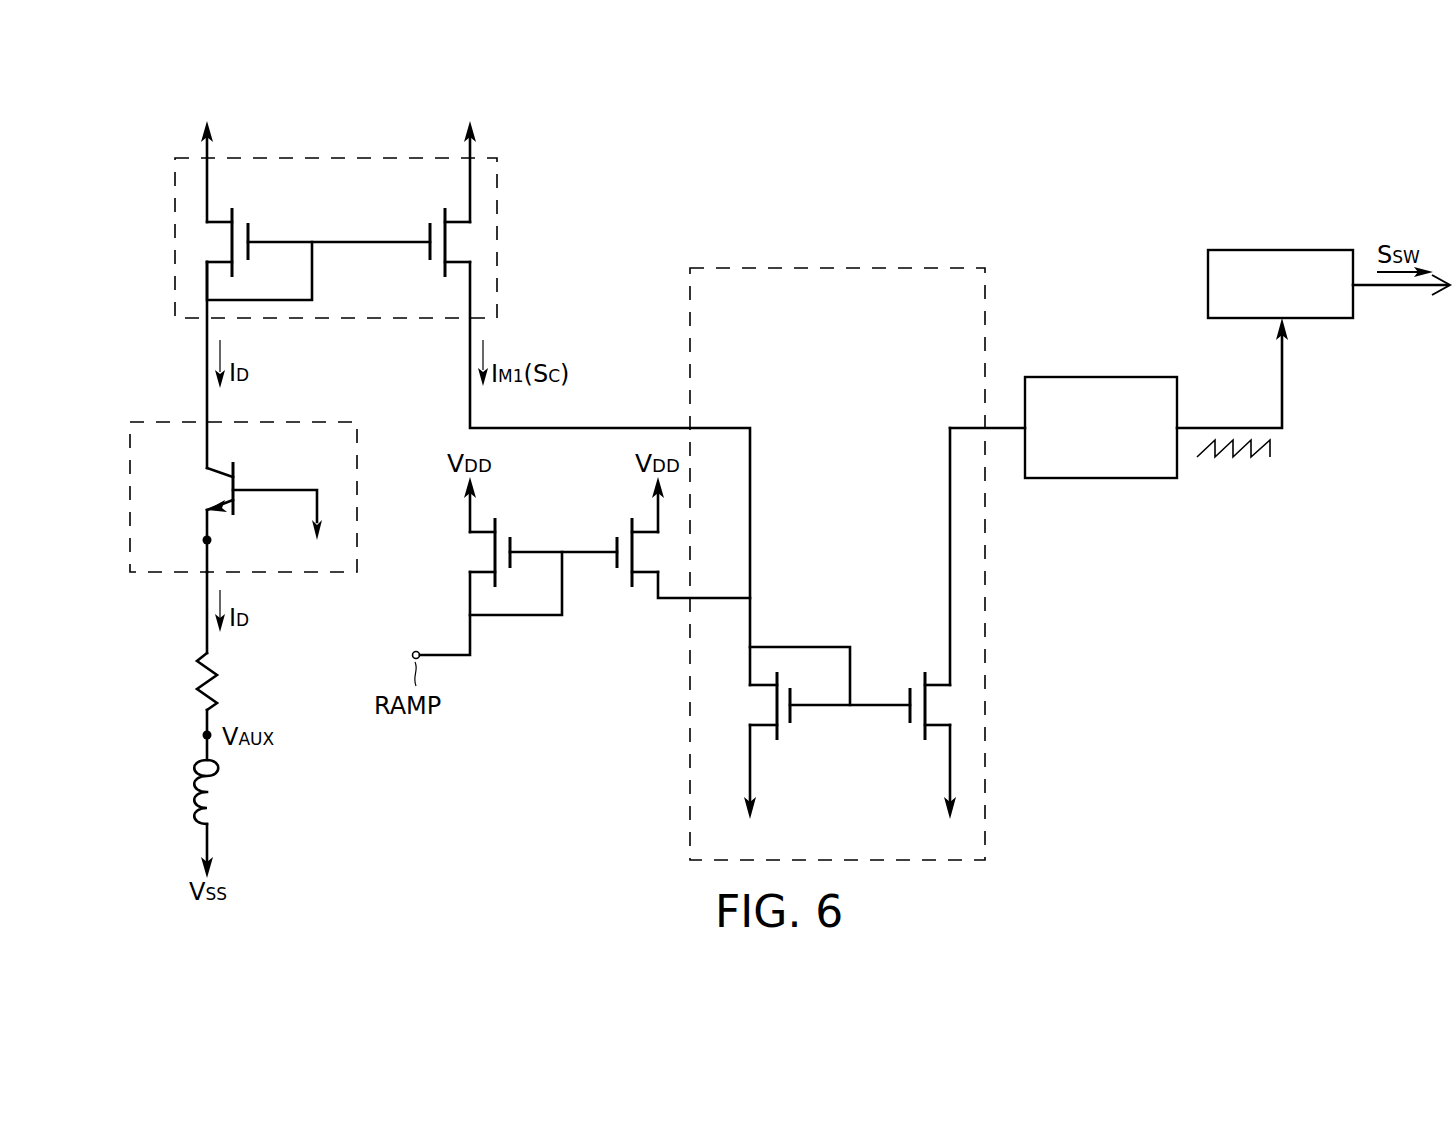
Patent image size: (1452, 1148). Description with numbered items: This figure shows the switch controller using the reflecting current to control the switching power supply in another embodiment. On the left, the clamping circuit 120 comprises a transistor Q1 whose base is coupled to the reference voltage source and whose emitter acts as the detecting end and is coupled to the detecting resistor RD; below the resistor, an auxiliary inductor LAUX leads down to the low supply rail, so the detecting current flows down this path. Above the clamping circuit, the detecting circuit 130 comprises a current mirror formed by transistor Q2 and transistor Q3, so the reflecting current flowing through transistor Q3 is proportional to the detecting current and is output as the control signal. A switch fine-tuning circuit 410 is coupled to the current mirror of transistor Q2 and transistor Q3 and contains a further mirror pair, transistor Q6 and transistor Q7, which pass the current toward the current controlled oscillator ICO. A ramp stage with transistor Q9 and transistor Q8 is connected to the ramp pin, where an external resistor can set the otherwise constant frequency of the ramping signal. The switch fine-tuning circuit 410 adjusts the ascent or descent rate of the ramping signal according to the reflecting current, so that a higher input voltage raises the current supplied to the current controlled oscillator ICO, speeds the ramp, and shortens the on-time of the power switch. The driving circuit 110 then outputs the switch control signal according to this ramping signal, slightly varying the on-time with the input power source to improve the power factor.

The driving circuit 110 is at (1278, 249).
The clamping circuit 120 is at (233, 476).
The detecting circuit 130 is at (336, 206).
The switch fine-tuning circuit 410 is at (837, 535).
The transistor Q1 is at (244, 479).
The transistor Q2 is at (245, 217).
The transistor Q3 is at (432, 217).
The transistor Q6 is at (790, 727).
The transistor Q7 is at (910, 727).
The transistor Q8 is at (622, 576).
The transistor Q9 is at (508, 530).
The current controlled oscillator ICO is at (1104, 376).
The detecting resistor RD is at (225, 681).
The auxiliary inductor LAUX is at (236, 792).